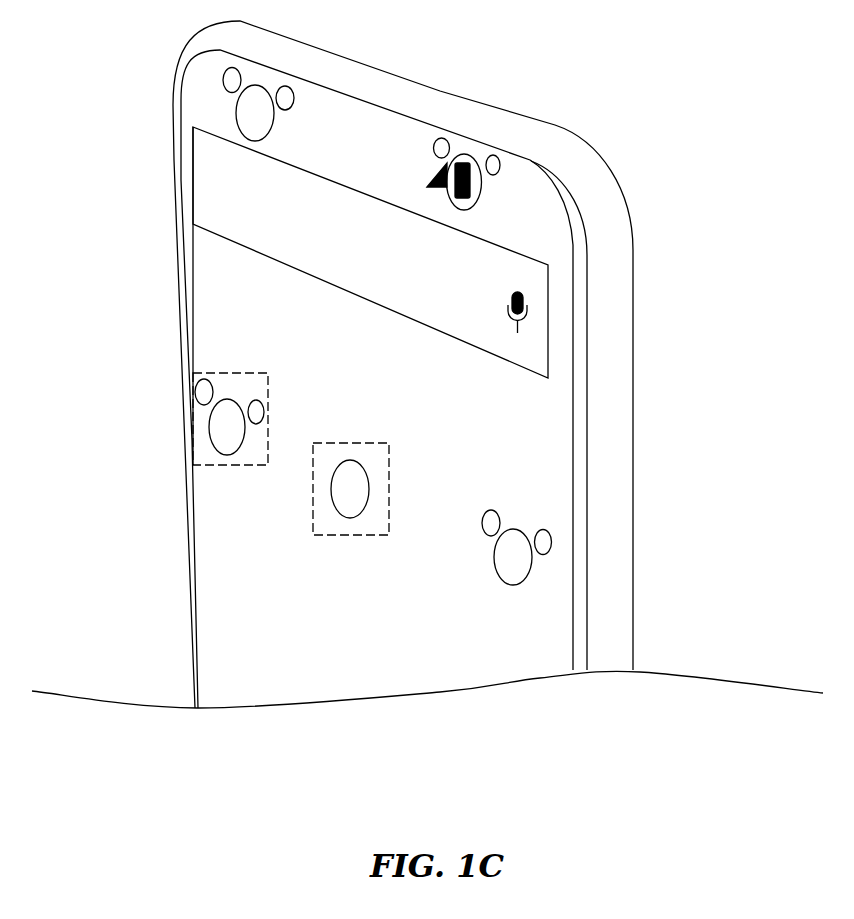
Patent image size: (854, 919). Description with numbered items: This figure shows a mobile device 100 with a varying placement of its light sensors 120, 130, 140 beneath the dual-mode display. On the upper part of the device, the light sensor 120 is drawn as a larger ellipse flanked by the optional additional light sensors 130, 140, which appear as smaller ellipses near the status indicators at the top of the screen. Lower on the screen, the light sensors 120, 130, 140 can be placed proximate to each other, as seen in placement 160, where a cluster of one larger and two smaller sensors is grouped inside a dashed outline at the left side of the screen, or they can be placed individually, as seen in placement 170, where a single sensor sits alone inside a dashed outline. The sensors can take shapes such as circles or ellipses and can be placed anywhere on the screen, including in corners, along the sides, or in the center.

The mobile device 100 is at (233, 495).
The light sensor 120 is at (463, 153).
The additional light sensor 130 is at (441, 138).
The additional light sensor 140 is at (500, 158).
The placement 160 is at (190, 382).
The placement 170 is at (387, 474).